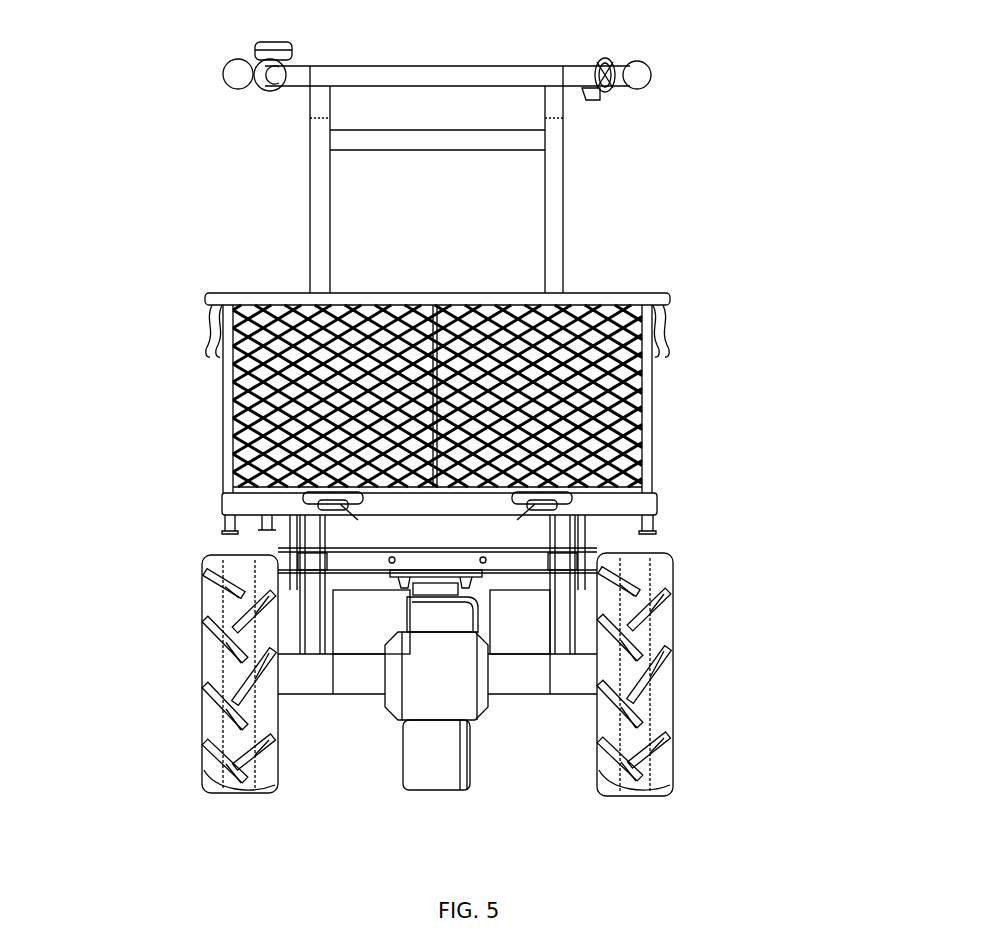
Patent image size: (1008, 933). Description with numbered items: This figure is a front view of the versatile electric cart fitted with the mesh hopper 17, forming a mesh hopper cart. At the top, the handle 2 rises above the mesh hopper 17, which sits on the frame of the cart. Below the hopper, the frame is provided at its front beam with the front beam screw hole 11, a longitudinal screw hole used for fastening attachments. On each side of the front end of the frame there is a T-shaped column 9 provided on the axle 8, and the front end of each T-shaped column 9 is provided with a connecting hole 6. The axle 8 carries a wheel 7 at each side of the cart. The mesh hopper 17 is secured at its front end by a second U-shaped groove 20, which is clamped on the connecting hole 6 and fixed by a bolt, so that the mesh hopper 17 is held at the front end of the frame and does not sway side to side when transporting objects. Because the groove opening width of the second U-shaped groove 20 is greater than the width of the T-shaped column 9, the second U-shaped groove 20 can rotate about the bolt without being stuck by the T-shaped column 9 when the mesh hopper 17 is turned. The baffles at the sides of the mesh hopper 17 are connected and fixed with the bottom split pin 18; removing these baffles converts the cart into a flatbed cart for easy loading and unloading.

The handle 2 is at (240, 88).
The connecting hole 6 is at (308, 560).
The wheel 7 is at (70, 760).
The axle 8 is at (577, 767).
The T-shaped column 9 is at (387, 767).
The front beam screw hole 11 is at (823, 753).
The mesh hopper 17 is at (217, 408).
The split pin 18 is at (865, 600).
The second U-shaped groove 20 is at (295, 540).